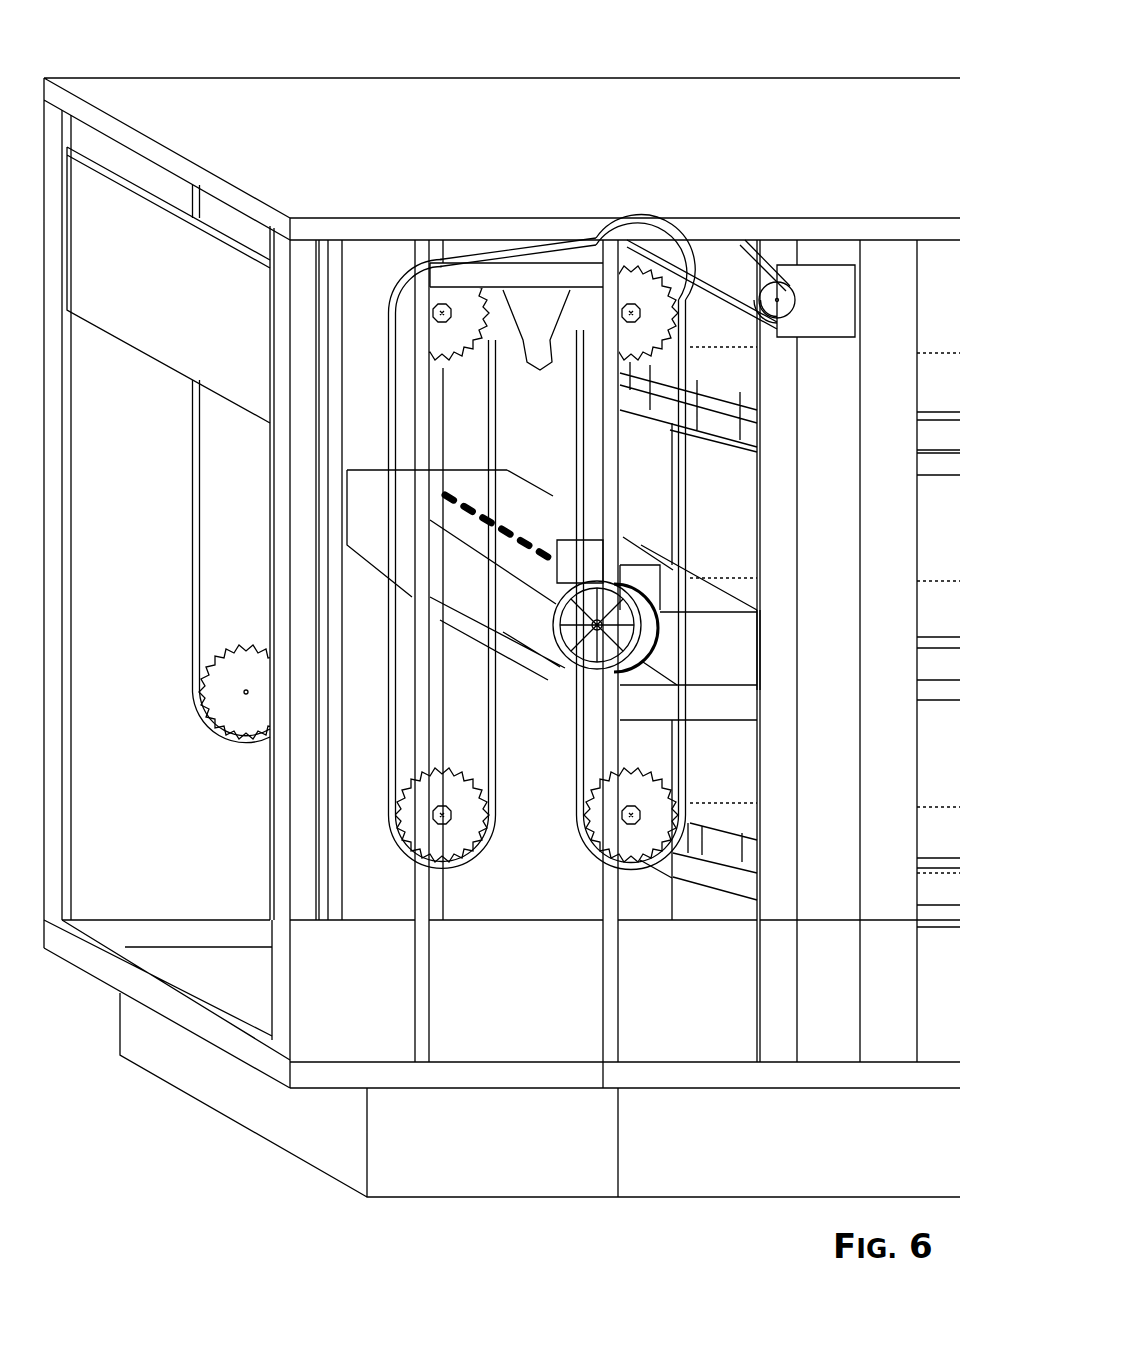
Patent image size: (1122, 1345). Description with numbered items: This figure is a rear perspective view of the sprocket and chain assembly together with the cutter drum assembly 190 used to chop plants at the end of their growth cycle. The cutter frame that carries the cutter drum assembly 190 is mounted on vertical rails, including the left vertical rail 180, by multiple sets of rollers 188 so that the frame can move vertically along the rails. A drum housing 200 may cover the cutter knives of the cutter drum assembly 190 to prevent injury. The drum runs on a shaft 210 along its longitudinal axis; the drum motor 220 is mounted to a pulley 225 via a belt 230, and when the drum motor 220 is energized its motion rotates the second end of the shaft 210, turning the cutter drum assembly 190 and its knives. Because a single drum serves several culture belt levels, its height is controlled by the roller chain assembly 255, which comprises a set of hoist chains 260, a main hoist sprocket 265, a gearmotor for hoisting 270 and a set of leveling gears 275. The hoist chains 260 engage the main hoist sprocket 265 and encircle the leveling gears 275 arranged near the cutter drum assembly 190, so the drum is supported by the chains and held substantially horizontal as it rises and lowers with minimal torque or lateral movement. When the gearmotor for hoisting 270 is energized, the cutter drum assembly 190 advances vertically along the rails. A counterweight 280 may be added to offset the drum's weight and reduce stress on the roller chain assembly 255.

The left vertical rail 180 is at (612, 1043).
The rollers 188 is at (757, 620).
The cutter drum assembly 190 is at (440, 805).
The drum housing 200 is at (377, 500).
The shaft 210 is at (510, 533).
The drum motor 220 is at (655, 612).
The pulley 225 is at (565, 655).
The belt 230 is at (590, 640).
The roller chain assembly 255 is at (470, 260).
The hoist chains 260 is at (392, 410).
The main hoist sprocket 265 is at (777, 295).
The gearmotor for hoisting 270 is at (843, 265).
The leveling gears 275 is at (213, 707).
The counterweight 280 is at (103, 220).